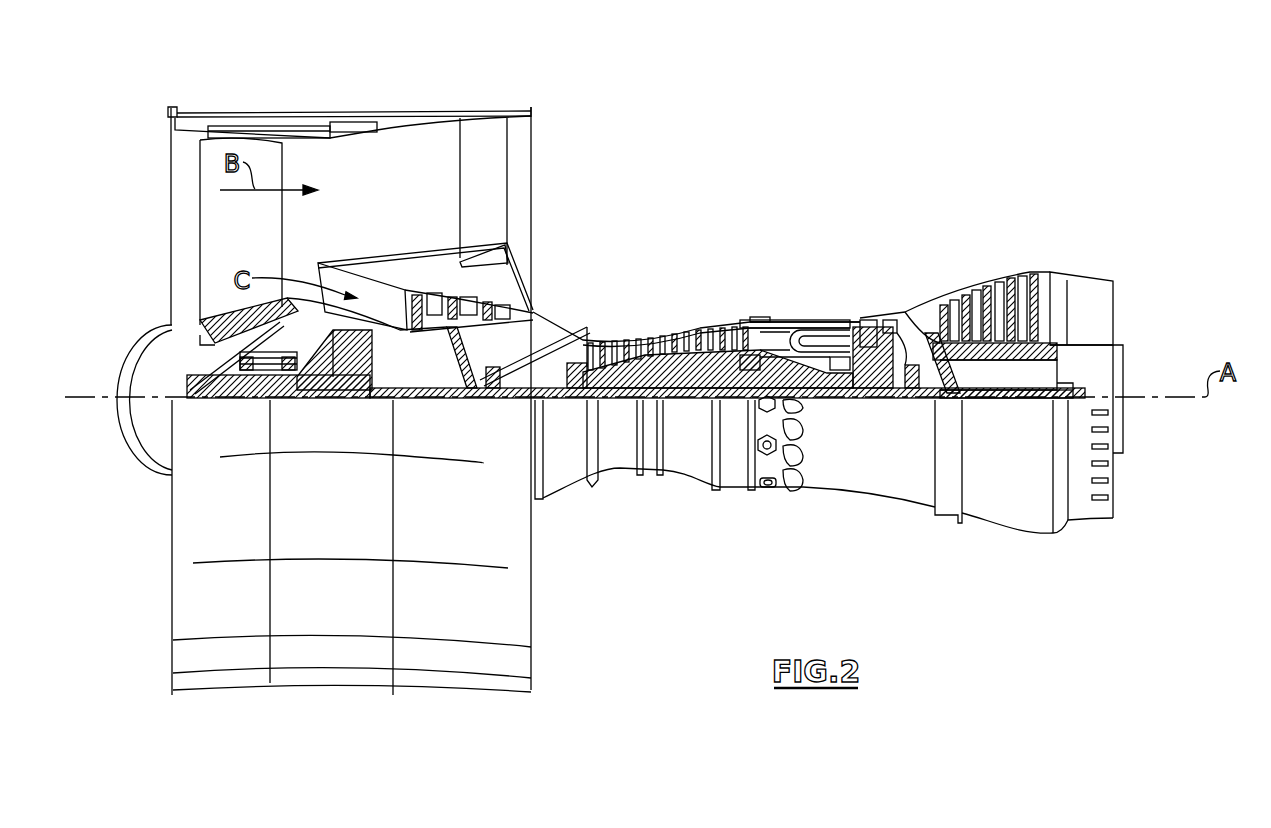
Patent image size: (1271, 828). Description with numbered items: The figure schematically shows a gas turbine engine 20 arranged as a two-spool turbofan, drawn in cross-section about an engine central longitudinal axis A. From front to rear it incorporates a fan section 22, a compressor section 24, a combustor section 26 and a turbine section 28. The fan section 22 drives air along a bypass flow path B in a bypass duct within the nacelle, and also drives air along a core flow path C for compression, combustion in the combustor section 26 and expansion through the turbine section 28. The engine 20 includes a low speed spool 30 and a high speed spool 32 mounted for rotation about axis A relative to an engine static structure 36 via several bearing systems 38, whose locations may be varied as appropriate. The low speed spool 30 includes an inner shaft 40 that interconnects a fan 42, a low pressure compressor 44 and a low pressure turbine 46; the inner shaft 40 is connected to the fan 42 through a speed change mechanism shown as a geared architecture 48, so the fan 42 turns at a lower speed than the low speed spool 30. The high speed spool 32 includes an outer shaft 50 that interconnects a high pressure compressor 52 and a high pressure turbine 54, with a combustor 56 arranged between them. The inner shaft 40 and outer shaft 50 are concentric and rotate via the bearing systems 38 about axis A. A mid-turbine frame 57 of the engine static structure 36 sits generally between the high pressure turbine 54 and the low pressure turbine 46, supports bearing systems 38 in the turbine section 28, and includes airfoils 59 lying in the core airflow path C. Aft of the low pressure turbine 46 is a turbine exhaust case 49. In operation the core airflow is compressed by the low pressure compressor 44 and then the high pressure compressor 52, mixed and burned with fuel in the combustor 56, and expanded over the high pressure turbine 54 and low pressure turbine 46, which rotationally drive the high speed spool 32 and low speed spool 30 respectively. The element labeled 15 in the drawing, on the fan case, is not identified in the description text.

The fan case / nacelle 15 is at (353, 118).
The gas turbine engine 20 is at (815, 163).
The fan section 22 is at (282, 110).
The compressor section 24 is at (583, 303).
The combustor section 26 is at (806, 290).
The turbine section 28 is at (955, 256).
The low speed spool 30 is at (691, 410).
The high speed spool 32 is at (740, 335).
The engine static structure 36 is at (732, 490).
The bearing systems 38 is at (493, 392).
The inner shaft 40 is at (553, 400).
The fan 42 is at (223, 242).
The low pressure compressor 44 is at (460, 303).
The low pressure turbine 46 is at (1000, 286).
The geared architecture 48 is at (360, 381).
The turbine exhaust case 49 is at (1114, 307).
The outer shaft 50 is at (813, 393).
The high pressure compressor 52 is at (668, 372).
The high pressure turbine 54 is at (873, 316).
The combustor 56 is at (808, 336).
The mid-turbine frame 57 is at (916, 302).
The airfoils 59 is at (912, 332).